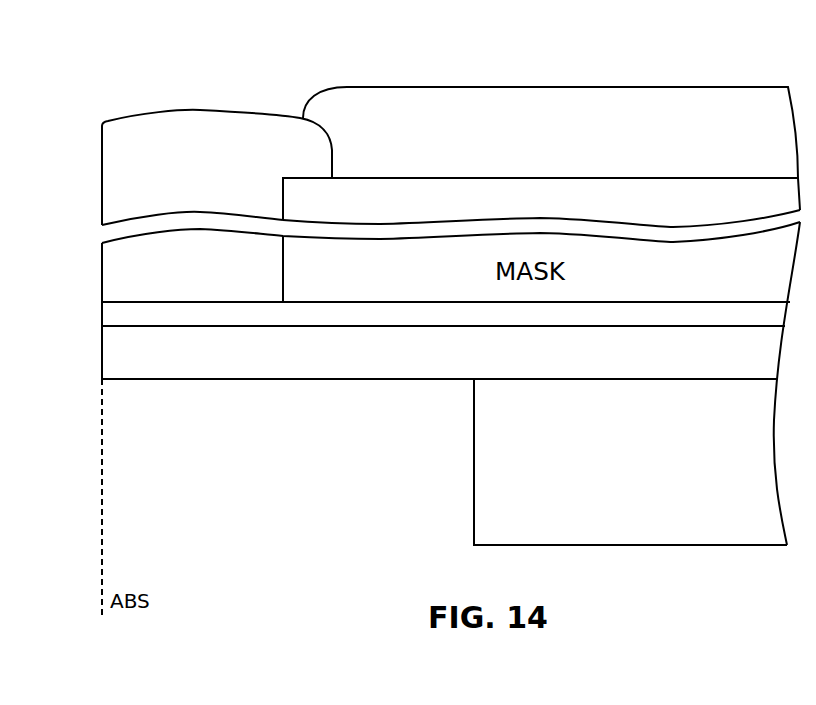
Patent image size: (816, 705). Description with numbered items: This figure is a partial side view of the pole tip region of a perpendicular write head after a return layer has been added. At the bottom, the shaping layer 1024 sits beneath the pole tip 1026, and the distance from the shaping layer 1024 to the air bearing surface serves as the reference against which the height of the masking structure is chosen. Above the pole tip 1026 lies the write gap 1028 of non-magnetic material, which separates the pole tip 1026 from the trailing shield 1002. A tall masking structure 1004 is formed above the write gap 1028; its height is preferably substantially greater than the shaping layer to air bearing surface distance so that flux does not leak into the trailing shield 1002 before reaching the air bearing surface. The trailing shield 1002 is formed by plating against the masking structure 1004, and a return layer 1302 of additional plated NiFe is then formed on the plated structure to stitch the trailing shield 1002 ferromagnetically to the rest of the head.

The trailing shield 1002 is at (228, 112).
The masking structure 1004 is at (423, 178).
The return layer 1302 is at (608, 87).
The write gap 1028 is at (118, 302).
The pole tip 1026 is at (315, 379).
The shaping layer 1024 is at (474, 493).